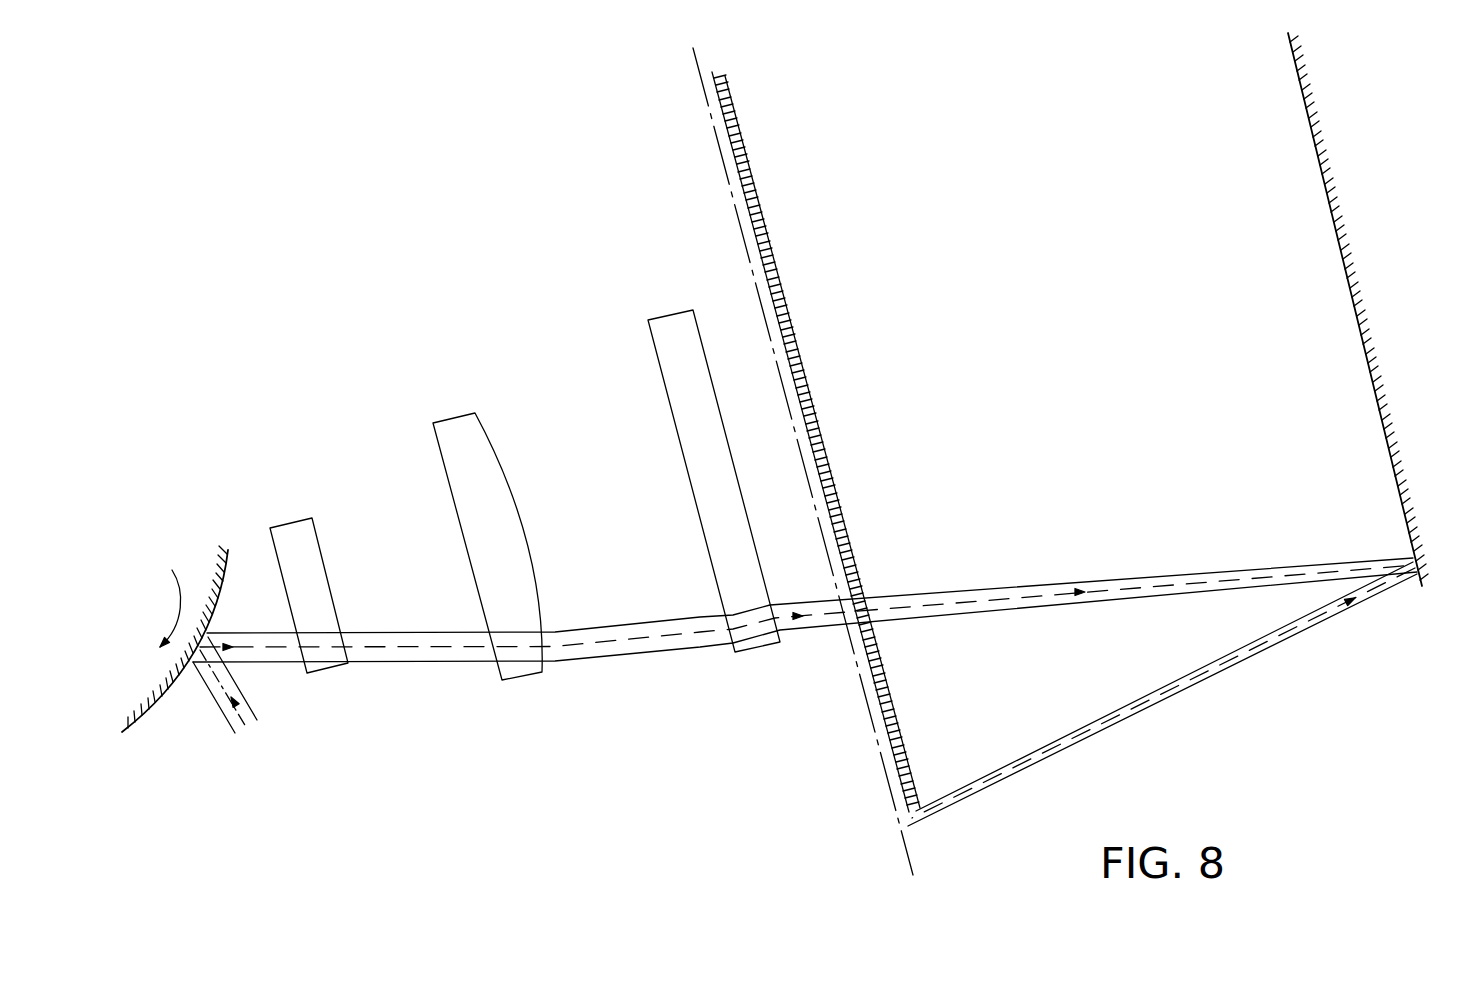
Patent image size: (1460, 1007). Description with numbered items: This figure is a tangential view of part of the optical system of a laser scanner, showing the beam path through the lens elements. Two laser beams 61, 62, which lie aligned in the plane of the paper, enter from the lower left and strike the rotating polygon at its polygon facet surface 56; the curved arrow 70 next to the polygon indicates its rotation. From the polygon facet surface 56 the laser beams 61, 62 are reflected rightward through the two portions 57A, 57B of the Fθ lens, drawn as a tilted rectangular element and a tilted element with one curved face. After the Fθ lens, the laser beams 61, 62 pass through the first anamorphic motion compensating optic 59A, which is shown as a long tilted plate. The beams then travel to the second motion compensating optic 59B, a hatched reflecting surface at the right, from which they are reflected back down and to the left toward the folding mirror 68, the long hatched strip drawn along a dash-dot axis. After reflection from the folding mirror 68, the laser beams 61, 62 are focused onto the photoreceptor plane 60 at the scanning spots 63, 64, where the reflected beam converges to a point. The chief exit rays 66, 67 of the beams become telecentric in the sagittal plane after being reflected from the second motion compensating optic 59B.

The polygon facet surface 56 is at (178, 683).
The rotation direction of mirror 70 is at (158, 608).
The Fθ lens portion 57A is at (298, 530).
The Fθ lens portion 57B is at (460, 425).
The first anamorphic motion compensating optic 59A is at (670, 322).
The second motion compensating optic 59B is at (1420, 582).
The laser beam 61 is at (807, 588).
The laser beam 62 is at (583, 629).
The chief exit ray 66 is at (805, 654).
The chief exit ray 67 is at (620, 647).
The scanning spot 63 is at (1161, 704).
The scanning spot 64 is at (908, 828).
The folding mirror 68 is at (715, 73).
The photoreceptor plane 60 is at (873, 730).